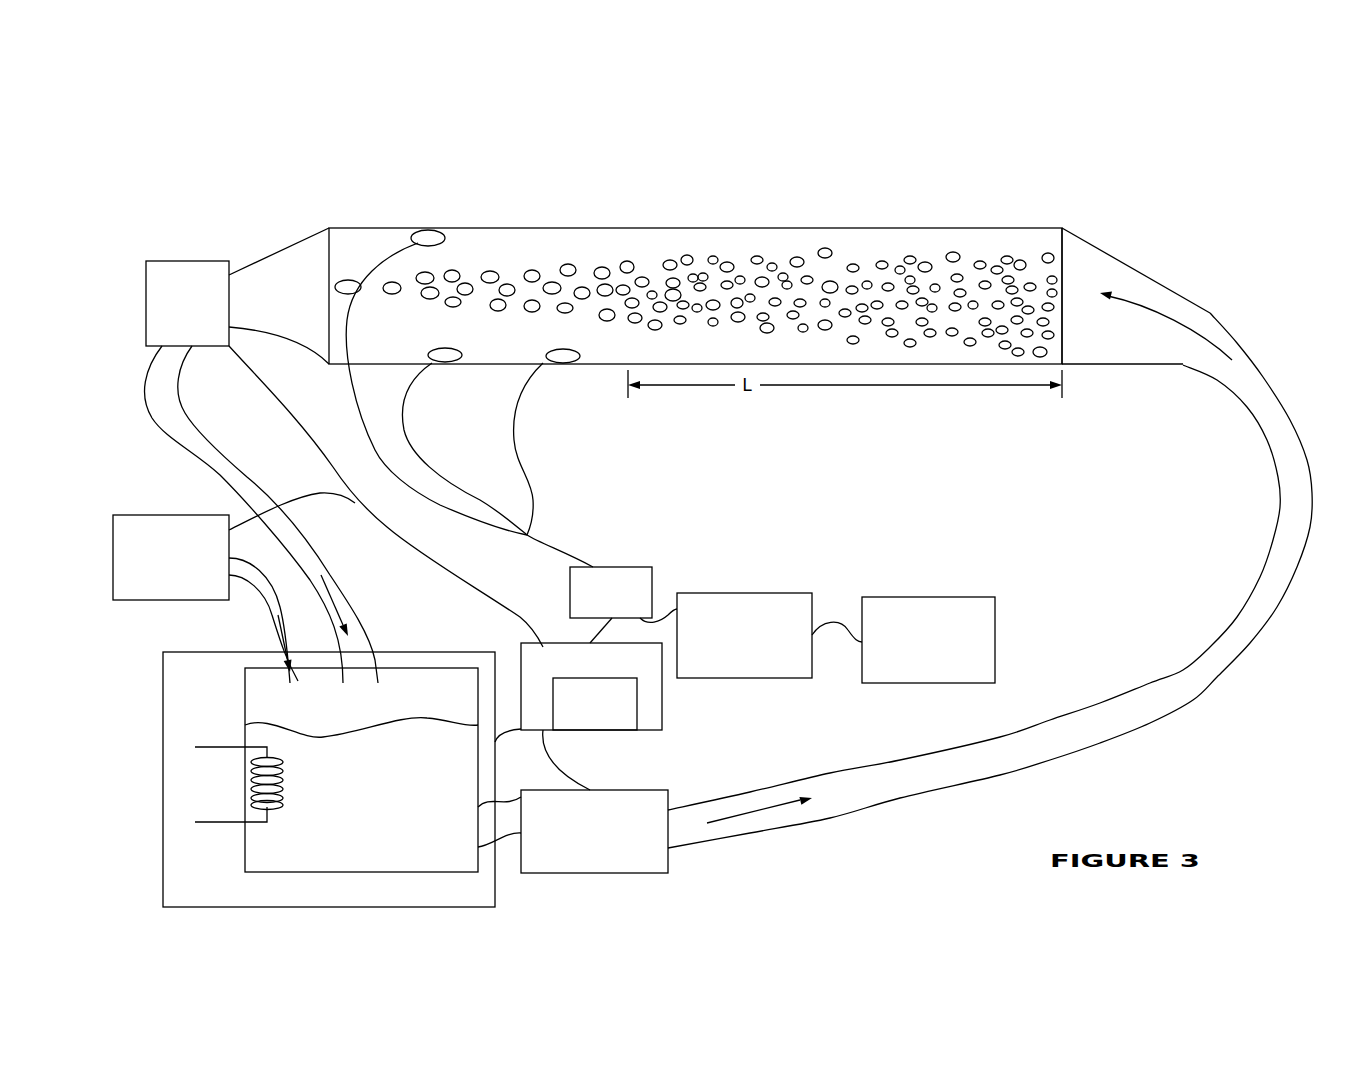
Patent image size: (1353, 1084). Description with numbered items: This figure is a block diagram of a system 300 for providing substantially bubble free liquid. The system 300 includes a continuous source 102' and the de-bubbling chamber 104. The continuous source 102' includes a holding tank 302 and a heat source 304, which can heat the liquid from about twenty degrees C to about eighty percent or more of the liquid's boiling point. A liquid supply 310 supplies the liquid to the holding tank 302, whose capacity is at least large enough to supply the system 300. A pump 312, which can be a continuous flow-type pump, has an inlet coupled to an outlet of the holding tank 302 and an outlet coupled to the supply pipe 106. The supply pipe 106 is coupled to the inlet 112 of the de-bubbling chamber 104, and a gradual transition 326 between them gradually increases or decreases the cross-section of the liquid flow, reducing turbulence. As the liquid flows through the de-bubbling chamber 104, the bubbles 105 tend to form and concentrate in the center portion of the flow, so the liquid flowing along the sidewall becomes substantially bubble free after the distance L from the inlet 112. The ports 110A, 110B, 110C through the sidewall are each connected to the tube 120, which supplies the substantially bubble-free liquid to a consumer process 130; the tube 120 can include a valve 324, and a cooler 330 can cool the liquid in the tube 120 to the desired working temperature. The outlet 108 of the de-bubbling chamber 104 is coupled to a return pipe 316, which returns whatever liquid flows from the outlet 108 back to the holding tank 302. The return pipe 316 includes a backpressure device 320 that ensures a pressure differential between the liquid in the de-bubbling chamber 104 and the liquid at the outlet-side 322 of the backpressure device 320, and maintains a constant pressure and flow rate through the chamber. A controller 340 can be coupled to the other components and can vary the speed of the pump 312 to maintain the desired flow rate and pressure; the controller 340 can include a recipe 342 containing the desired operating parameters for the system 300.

The system 300 is at (342, 75).
The de-bubbling chamber 104 is at (597, 228).
The bubbles 105 is at (740, 280).
The supply pipe 106 is at (1212, 645).
The outlet 108 is at (325, 258).
The inlet 112 is at (1063, 255).
The port 110A is at (440, 362).
The port 110B is at (423, 238).
The port 110C is at (557, 363).
The tube 120 is at (543, 543).
The consumer process 130 is at (977, 597).
The holding tank 302 is at (455, 660).
The heat source 304 is at (250, 793).
The liquid supply 310 is at (135, 515).
The pump 312 is at (595, 873).
The return pipe 316 is at (230, 465).
The backpressure device 320 is at (195, 261).
The outlet-side 322 is at (187, 348).
The valve 324 is at (657, 577).
The gradual transition 326 is at (1137, 268).
The cooler 330 is at (797, 593).
The controller 340 is at (652, 707).
The recipe 342 is at (578, 723).
The continuous source 102' is at (365, 791).